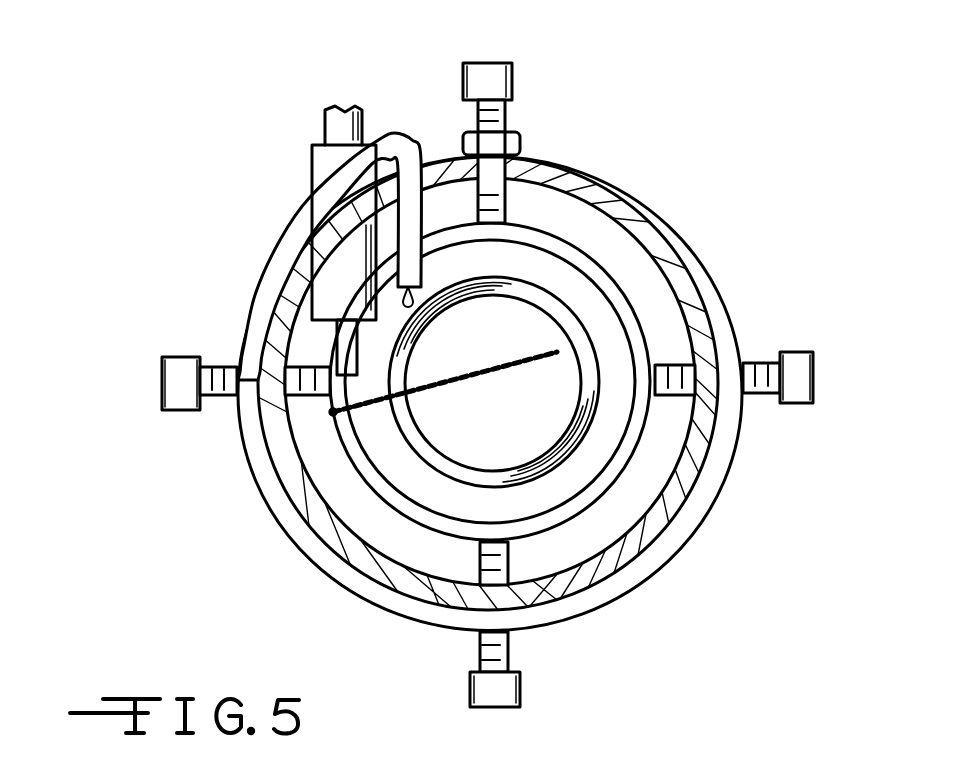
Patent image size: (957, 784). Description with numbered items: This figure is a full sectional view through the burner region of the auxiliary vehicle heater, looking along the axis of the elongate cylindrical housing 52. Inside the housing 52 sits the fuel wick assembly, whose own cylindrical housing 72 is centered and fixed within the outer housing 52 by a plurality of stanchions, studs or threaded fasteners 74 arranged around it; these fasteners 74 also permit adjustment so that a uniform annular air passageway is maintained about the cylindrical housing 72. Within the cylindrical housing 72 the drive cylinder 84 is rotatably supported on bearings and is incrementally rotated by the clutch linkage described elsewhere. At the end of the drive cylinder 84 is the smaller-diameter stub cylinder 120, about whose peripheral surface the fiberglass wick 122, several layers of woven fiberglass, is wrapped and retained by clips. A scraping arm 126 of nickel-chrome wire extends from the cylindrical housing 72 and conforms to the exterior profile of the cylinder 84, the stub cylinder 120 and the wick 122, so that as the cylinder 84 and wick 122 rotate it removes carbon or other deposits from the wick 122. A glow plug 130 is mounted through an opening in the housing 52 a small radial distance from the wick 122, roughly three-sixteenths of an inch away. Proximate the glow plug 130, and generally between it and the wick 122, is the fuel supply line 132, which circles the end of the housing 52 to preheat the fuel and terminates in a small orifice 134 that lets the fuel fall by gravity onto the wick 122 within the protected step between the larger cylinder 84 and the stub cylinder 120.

The elongate cylindrical housing 52 is at (648, 230).
The cylindrical housing 72 is at (630, 468).
The threaded fasteners 74 is at (513, 78).
The drive cylinder 84 is at (548, 497).
The stub cylinder 120 is at (517, 432).
The fiberglass wick 122 is at (583, 320).
The scraping arm 126 is at (457, 370).
The glow plug 130 is at (340, 340).
The fuel supply line 132 is at (396, 133).
The orifice 134 is at (428, 268).